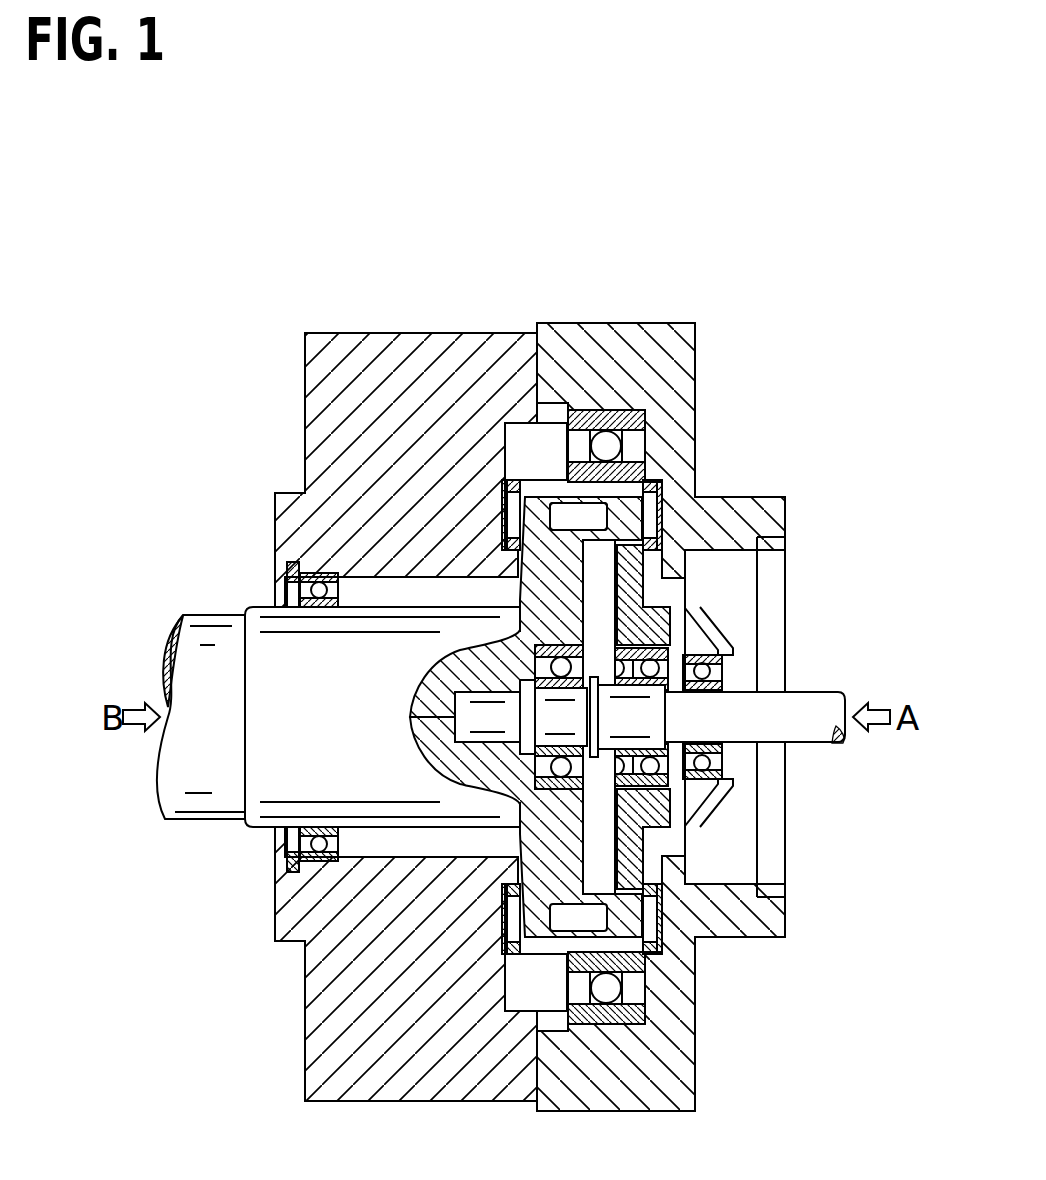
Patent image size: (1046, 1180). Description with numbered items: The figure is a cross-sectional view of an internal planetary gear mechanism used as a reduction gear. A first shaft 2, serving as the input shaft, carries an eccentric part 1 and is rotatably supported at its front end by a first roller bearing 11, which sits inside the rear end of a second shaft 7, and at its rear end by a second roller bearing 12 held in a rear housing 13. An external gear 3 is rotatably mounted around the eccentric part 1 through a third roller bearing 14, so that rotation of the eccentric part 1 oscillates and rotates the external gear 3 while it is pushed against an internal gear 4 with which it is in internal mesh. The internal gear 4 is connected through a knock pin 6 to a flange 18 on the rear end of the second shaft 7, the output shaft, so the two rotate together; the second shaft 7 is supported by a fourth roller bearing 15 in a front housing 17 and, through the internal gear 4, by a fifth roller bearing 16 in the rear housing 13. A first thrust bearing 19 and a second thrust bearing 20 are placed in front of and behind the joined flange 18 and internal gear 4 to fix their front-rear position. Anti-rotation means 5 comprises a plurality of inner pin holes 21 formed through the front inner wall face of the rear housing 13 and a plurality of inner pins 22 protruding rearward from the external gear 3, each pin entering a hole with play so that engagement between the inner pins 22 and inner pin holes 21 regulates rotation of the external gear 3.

The eccentric part 1 is at (650, 735).
The first shaft 2 is at (800, 707).
The external gear 3 is at (660, 587).
The internal gear 4 is at (643, 458).
The anti-rotation means 5 is at (870, 490).
The knock pin 6 is at (588, 512).
The second shaft 7 is at (288, 640).
The first roller bearing 11 is at (540, 620).
The second roller bearing 12 is at (702, 775).
The rear housing 13 is at (568, 1065).
The third roller bearing 14 is at (650, 800).
The fourth roller bearing 15 is at (300, 862).
The fifth roller bearing 16 is at (608, 990).
The front housing 17 is at (452, 1035).
The flange 18 is at (542, 490).
The first thrust bearing 19 is at (505, 478).
The second thrust bearing 20 is at (652, 508).
The inner pin holes 21 is at (683, 592).
The inner pins 22 is at (690, 580).